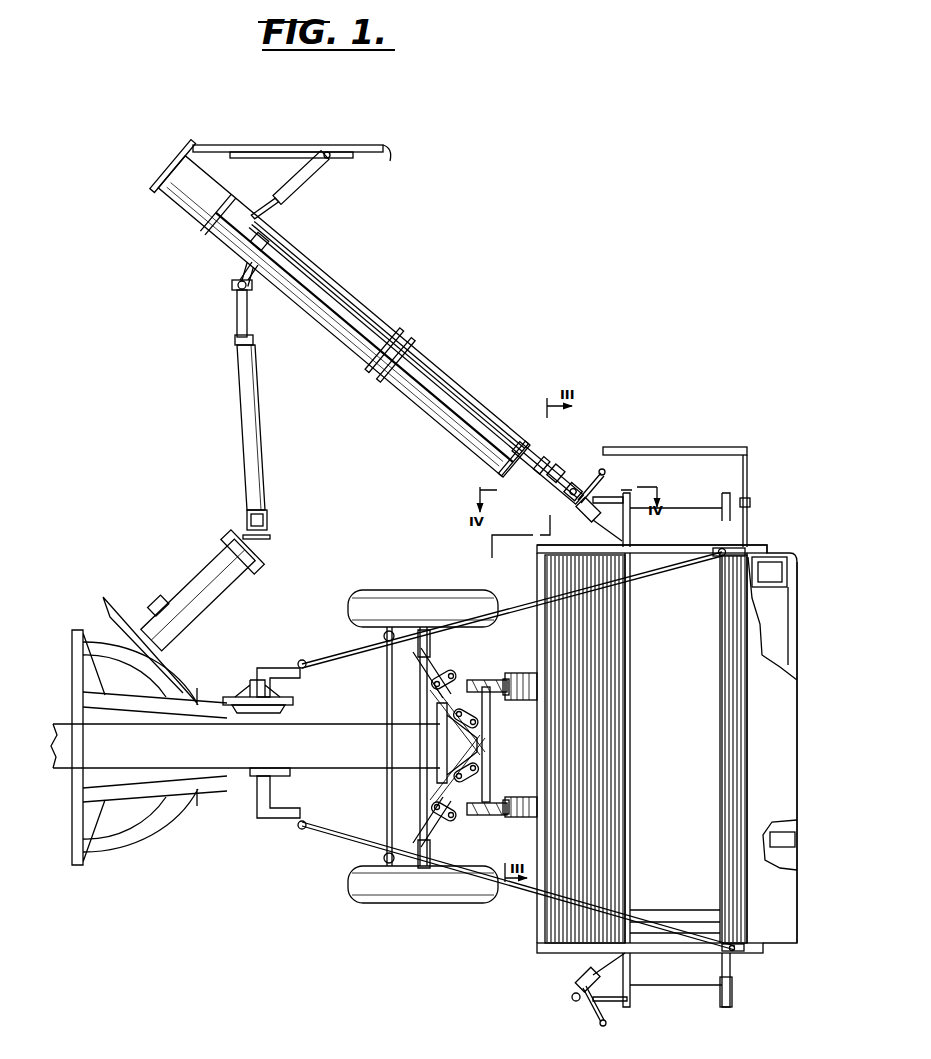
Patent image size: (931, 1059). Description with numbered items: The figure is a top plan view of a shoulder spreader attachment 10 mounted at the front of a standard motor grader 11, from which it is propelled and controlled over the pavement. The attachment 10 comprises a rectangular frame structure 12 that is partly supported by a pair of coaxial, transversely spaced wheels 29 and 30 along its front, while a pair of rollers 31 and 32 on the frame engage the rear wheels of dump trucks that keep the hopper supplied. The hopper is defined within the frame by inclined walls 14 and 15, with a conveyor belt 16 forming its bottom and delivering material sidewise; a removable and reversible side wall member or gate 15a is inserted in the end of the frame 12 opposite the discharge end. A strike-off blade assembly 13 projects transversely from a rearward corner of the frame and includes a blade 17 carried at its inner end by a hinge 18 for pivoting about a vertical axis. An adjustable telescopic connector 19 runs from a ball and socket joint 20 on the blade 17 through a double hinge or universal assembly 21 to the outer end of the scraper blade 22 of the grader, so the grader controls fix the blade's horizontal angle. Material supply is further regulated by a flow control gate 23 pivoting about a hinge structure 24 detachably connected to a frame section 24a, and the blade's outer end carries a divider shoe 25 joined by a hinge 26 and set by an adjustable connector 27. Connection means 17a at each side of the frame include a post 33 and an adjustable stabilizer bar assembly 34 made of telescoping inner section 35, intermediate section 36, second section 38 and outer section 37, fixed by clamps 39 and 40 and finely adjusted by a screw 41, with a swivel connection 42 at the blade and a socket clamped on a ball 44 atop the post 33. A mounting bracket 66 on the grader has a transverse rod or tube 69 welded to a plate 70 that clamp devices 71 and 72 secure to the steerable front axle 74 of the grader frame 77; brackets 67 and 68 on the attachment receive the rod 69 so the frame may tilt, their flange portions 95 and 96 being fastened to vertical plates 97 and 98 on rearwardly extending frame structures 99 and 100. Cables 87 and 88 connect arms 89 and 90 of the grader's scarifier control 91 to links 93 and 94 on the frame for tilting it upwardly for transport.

The shoulder spreader attachment 10 is at (723, 384).
The motor grader 11 is at (344, 556).
The rectangular frame structure 12 is at (766, 541).
The strike-off blade assembly 13 is at (160, 223).
The inclined wall 14 is at (793, 720).
The inclined wall 15 is at (550, 744).
The removable and reversible side wall member or gate 15a is at (675, 921).
The conveyor belt 16 is at (700, 645).
The blade 17 is at (490, 422).
The connection means 17a is at (601, 490).
The hinge 18 is at (553, 468).
The adjustable telescopic connector 19 is at (240, 378).
The ball and socket joint 20 is at (233, 284).
The double hinge or universal assembly 21 is at (268, 528).
The scraper blade 22 is at (196, 612).
The flow control gate 23 is at (690, 447).
The hinge structure 24 is at (747, 456).
The section of the frame 24a is at (752, 503).
The divider shoe 25 is at (300, 138).
The hinge 26 is at (197, 146).
The adjustable connector 27 is at (302, 187).
The wheel 29 is at (789, 569).
The wheel 30 is at (784, 838).
The roller 31 is at (790, 650).
The roller 32 is at (795, 862).
The post 33 is at (583, 513).
The adjustable stabilizer bar assembly 34 is at (432, 367).
The inner bar or pipe section 35 is at (545, 481).
The intermediate pipe section 36 is at (458, 403).
The outer pipe section 37 is at (315, 288).
The second bar or pipe section 38 is at (388, 327).
The clamp 39 is at (540, 466).
The clamp 40 is at (407, 349).
The screw 41 is at (245, 248).
The swivel connection 42 is at (566, 500).
The ball 44 is at (571, 997).
The mounting bracket 66 is at (447, 676).
The bracket 67 is at (480, 680).
The bracket 68 is at (455, 818).
The transversely extending rod or tube 69 is at (487, 788).
The plate 70 is at (462, 780).
The clamp devices 71 is at (440, 684).
The clamp devices 72 is at (440, 788).
The steerable front axle 74 is at (437, 826).
The frame of the motor grader 77 is at (360, 741).
The cable 87 is at (517, 608).
The cable 88 is at (510, 906).
The arm 89 is at (283, 668).
The arm 90 is at (285, 820).
The scarifier control 91 is at (236, 690).
The link 93 is at (718, 558).
The link 94 is at (740, 958).
The flange portion 95 is at (512, 700).
The flange portion 96 is at (470, 815).
The vertical plate 97 is at (506, 703).
The vertical plate 98 is at (507, 818).
The frame structure 99 is at (480, 684).
The frame structure 100 is at (528, 815).